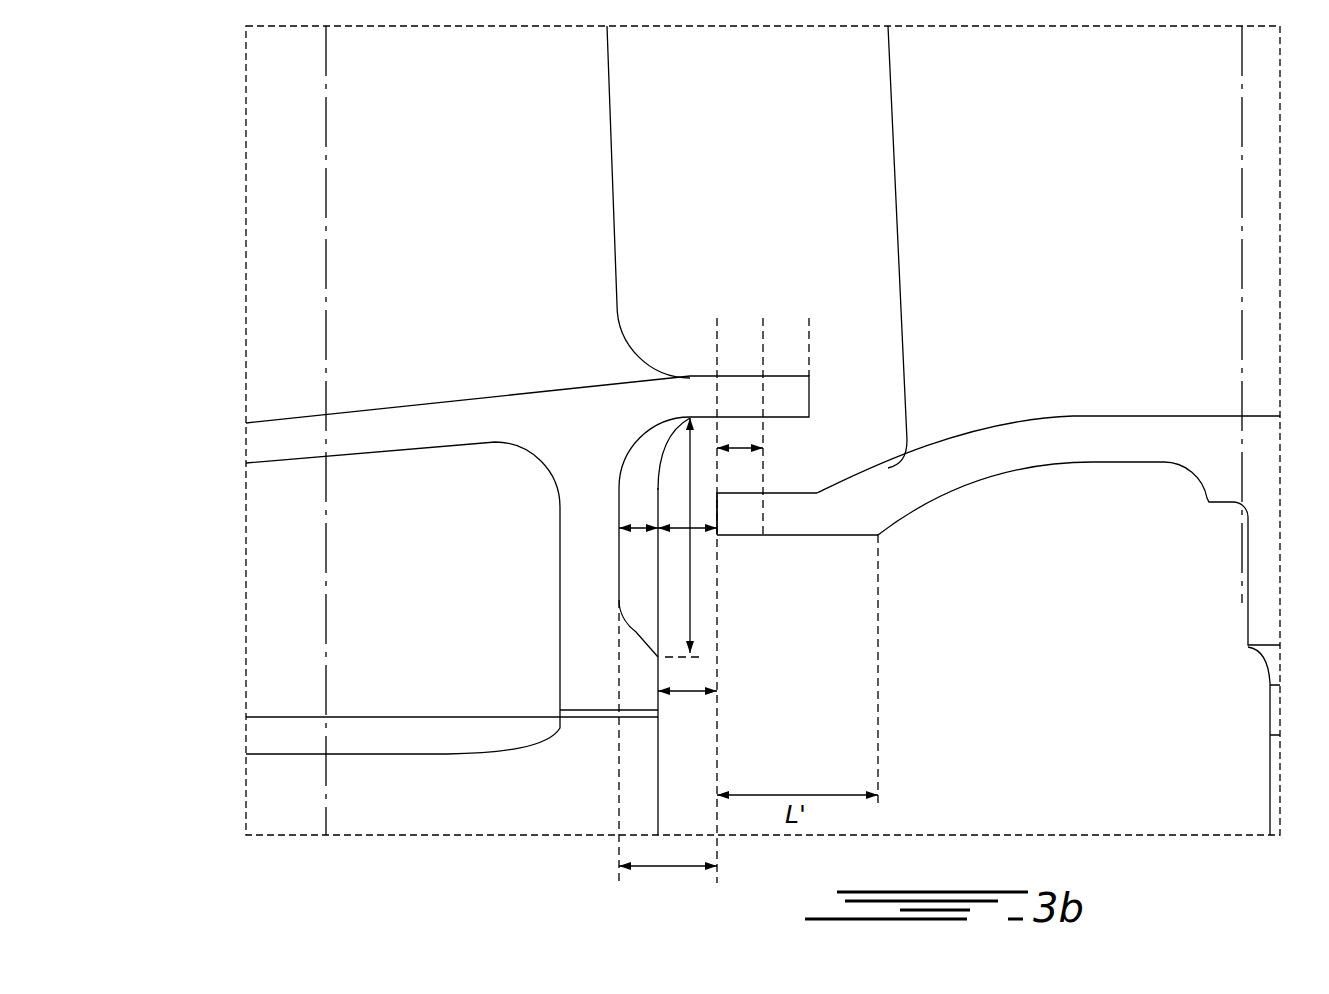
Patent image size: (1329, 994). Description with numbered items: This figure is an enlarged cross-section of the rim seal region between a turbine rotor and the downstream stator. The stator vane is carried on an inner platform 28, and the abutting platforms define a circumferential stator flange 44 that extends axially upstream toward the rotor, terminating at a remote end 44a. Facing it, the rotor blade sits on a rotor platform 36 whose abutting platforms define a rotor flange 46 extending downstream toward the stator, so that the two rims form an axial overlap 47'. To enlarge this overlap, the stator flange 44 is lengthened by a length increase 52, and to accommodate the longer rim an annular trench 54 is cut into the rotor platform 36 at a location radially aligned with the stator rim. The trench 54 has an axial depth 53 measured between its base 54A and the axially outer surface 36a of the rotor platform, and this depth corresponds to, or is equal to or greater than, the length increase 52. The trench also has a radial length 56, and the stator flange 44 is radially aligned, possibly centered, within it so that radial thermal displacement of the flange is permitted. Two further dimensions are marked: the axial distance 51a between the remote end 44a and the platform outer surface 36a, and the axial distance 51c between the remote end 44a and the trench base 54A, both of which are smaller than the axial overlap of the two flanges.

The inner platform 28 is at (1140, 433).
The rotor platform 36 is at (362, 432).
The axially outer surface of the rotor platform 36a is at (658, 677).
The stator flange 44 is at (855, 515).
The remote end of the stator rim 44a is at (721, 515).
The rotor flange 46 is at (735, 393).
The overlap 47' is at (829, 278).
The axial distance 51a is at (683, 692).
The axial distance 51c is at (668, 867).
The length increase 52 is at (740, 449).
The axial depth 53 is at (641, 535).
The annular trench 54 is at (611, 512).
The base of the trench 54A is at (618, 538).
The radial length 56 is at (690, 597).